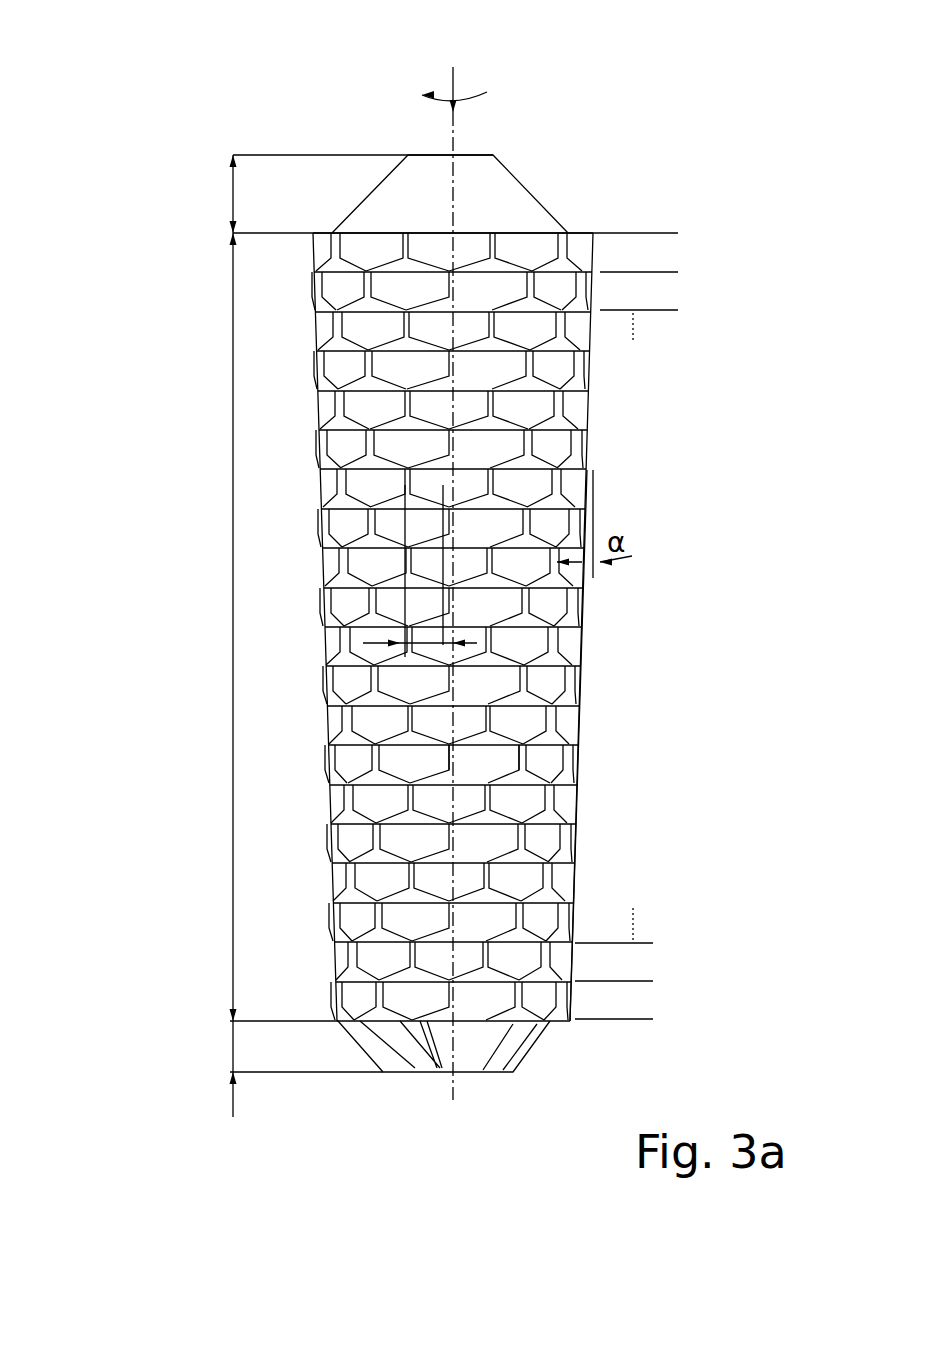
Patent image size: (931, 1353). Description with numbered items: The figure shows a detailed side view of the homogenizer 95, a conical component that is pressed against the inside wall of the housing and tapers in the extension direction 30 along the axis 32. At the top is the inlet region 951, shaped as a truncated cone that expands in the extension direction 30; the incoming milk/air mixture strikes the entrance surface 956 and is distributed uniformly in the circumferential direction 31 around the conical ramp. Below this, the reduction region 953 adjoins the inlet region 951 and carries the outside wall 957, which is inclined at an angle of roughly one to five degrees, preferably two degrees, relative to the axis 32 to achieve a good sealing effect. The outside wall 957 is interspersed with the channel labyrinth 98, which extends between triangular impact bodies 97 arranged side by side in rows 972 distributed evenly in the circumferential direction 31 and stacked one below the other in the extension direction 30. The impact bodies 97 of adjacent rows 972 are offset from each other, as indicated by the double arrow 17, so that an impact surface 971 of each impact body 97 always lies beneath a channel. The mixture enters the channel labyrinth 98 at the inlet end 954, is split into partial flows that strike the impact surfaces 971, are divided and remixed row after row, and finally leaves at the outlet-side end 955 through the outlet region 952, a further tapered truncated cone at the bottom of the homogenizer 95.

The homogenizer 95 is at (658, 118).
The entrance surface 956 is at (421, 152).
The extension direction 30 is at (453, 73).
The circumferential direction 31 is at (472, 95).
The impact bodies 97 is at (532, 887).
The channel labyrinth 98 is at (480, 740).
The impact surfaces 971 is at (518, 784).
The outside wall 957 is at (582, 877).
The axis 32 is at (453, 1078).
The double arrow 17 is at (425, 643).
The inlet region 951 is at (344, 194).
The inlet end 954 is at (186, 233).
The reduction region 953 is at (221, 627).
The outlet-side end 955 is at (193, 1021).
The outlet region 952 is at (307, 1069).
The rows 972 is at (640, 999).